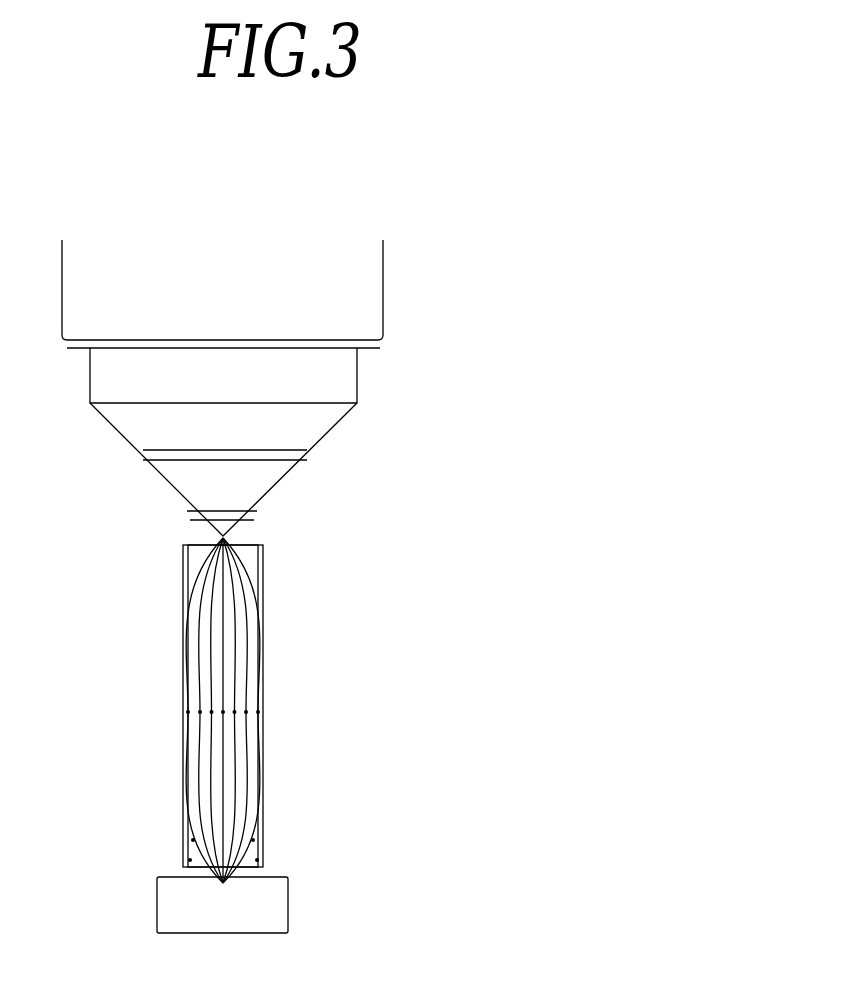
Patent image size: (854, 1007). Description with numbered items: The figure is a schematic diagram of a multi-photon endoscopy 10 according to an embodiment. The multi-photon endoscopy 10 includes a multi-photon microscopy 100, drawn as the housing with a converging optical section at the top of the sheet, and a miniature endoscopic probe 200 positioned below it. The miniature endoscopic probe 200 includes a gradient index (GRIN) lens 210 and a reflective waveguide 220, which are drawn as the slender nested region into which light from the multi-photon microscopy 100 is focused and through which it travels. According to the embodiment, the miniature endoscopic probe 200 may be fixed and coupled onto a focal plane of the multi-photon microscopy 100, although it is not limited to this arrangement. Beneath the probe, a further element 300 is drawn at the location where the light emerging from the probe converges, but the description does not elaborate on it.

The multi-photon endoscopy 10 is at (294, 511).
The multi-photon microscopy 100 is at (360, 293).
The miniature endoscopic probe 200 is at (176, 710).
The gradient index (GRIN) lens 210 is at (248, 563).
The reflective waveguide 220 is at (265, 640).
The workpiece 300 is at (265, 910).